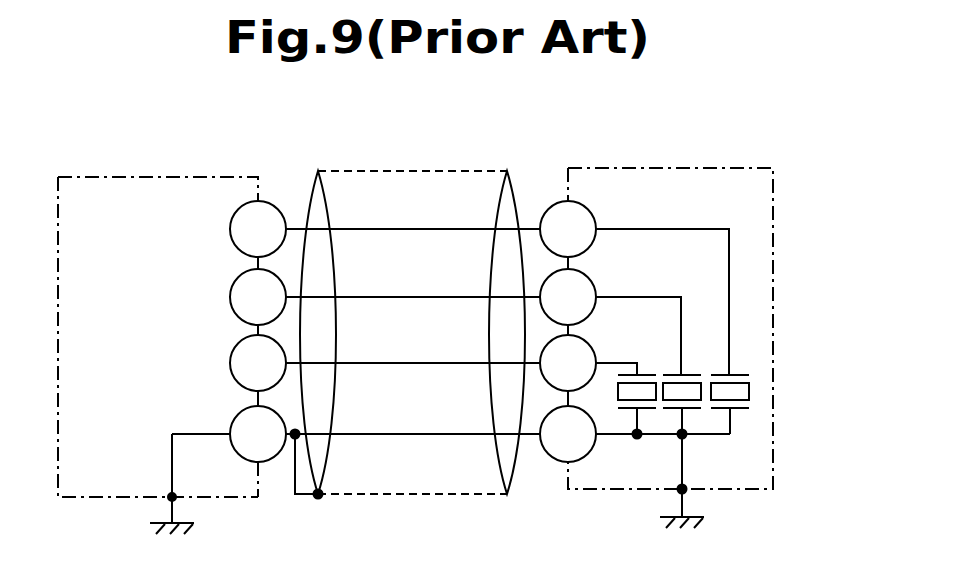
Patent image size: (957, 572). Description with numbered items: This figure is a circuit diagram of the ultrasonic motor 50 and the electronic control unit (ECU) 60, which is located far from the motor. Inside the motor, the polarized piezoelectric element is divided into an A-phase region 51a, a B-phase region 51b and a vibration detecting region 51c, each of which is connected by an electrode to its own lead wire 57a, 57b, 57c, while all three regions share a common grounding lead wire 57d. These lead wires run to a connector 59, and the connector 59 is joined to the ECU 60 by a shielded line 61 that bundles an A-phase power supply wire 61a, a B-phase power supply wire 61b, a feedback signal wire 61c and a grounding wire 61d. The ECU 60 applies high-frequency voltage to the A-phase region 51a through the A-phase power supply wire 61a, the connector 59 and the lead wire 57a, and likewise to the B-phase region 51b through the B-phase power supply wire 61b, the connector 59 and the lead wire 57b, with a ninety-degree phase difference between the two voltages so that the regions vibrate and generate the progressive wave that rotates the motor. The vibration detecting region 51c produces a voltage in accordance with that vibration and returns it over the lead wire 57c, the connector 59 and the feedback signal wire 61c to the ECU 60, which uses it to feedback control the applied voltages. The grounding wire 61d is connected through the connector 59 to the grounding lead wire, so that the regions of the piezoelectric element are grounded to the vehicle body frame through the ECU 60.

The electronic control unit (ECU) 60 is at (116, 176).
The shielded line 61 is at (351, 170).
The A-phase power supply wire 61a is at (400, 365).
The B-phase power supply wire 61b is at (400, 299).
The feedback signal wire 61c is at (400, 231).
The grounding wire 61d is at (400, 436).
The connector 59 is at (549, 186).
The ultrasonic motor 50 is at (748, 167).
The lead wire 57a is at (615, 362).
The lead wire 57b is at (660, 296).
The lead wire 57c is at (709, 228).
The common grounding lead wire 57d is at (602, 437).
The A-phase region 51a is at (645, 400).
The B-phase region 51b is at (690, 400).
The vibration detecting region 51c is at (742, 400).